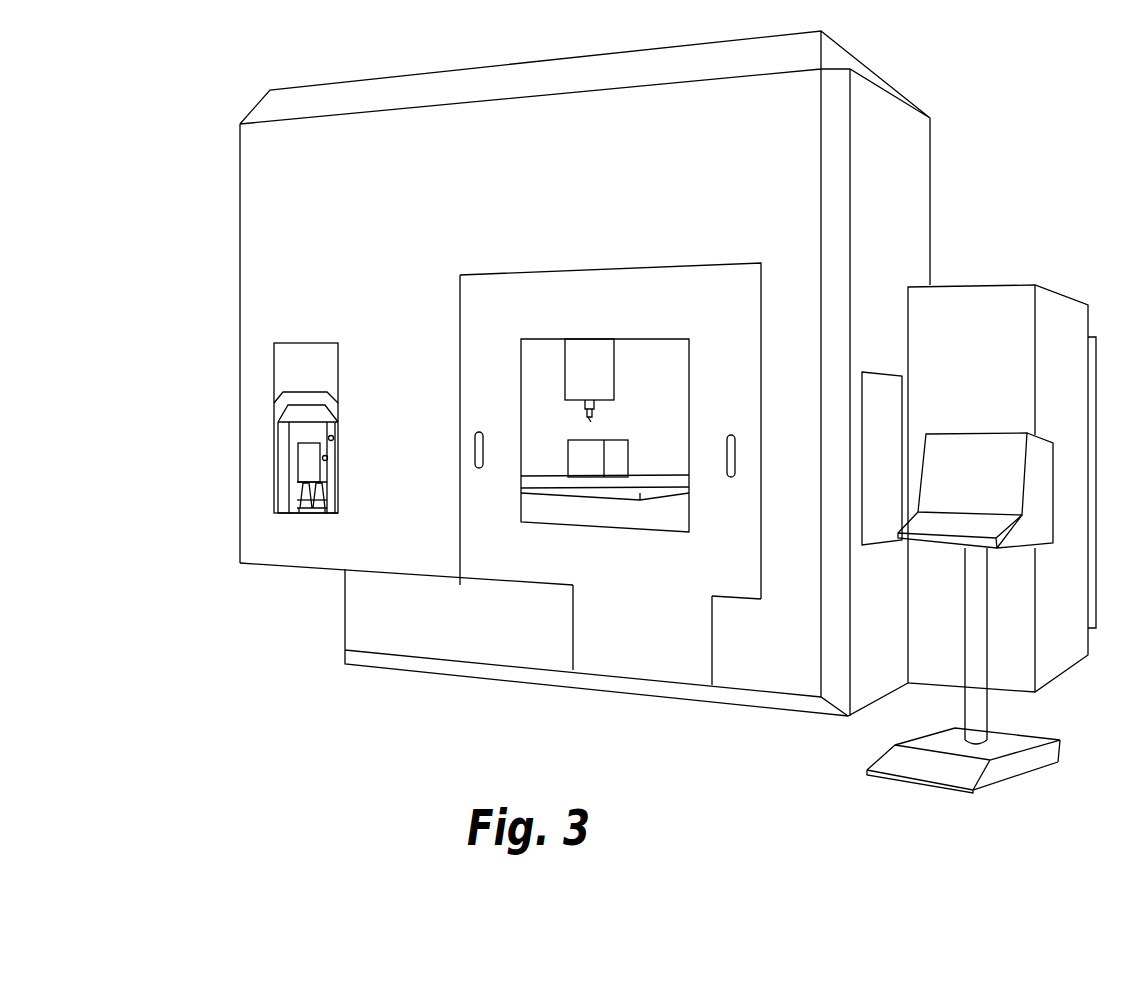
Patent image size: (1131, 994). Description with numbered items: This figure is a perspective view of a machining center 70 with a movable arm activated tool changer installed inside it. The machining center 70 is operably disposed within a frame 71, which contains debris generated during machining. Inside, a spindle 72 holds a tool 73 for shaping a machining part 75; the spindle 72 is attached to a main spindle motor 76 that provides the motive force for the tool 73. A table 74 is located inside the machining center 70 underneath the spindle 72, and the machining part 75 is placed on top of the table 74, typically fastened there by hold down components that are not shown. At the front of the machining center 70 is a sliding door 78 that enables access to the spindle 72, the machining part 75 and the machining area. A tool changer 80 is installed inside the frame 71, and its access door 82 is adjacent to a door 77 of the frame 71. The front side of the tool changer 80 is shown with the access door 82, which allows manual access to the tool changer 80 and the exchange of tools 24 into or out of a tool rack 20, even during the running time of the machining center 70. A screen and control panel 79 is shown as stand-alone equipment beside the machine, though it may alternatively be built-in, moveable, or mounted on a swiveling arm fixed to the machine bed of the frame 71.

The machining center 70 is at (270, 592).
The frame 71 is at (357, 605).
The spindle 72 is at (587, 407).
The tool 73 is at (593, 423).
The table 74 is at (575, 493).
The machining part 75 is at (612, 462).
The main spindle motor 76 is at (568, 365).
The door 77 is at (290, 363).
The sliding door 78 is at (652, 647).
The screen and control panel 79 is at (1007, 795).
The tool changer 80 is at (270, 434).
The access door 82 is at (307, 463).
The tools 24 is at (298, 493).
The tool rack 20 is at (293, 515).